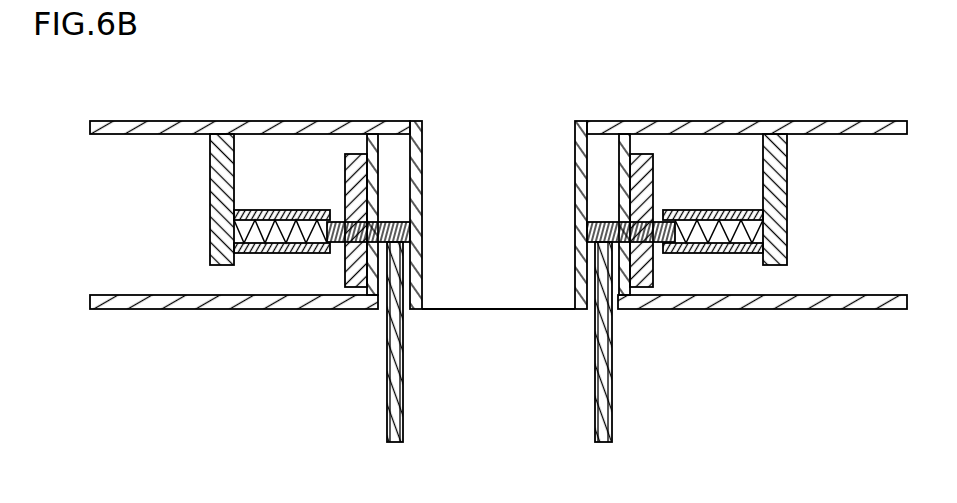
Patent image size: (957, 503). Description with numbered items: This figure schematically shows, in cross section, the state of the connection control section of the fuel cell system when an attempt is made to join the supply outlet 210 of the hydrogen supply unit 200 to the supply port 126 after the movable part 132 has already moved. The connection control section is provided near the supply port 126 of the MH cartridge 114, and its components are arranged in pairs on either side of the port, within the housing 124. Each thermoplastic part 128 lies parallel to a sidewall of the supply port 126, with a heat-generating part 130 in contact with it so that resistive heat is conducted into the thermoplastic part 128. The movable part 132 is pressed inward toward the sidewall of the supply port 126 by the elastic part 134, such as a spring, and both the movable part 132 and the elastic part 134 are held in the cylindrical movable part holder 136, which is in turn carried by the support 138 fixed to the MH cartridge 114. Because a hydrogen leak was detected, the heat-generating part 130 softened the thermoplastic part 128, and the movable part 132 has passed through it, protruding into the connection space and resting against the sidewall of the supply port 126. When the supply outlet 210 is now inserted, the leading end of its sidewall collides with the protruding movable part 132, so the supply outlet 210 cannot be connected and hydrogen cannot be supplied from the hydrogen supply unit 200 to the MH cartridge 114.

The MH cartridge 114 is at (727, 120).
The housing 124 is at (735, 311).
The supply port 126 is at (507, 217).
The thermoplastic part 128 is at (630, 142).
The heat-generating part 130 is at (653, 178).
The movable part 132 is at (657, 243).
The elastic part 134 is at (733, 237).
The movable part holder 136 is at (740, 210).
The support 138 is at (787, 198).
The hydrogen supply unit 200 is at (612, 372).
The supply outlet 210 is at (498, 375).